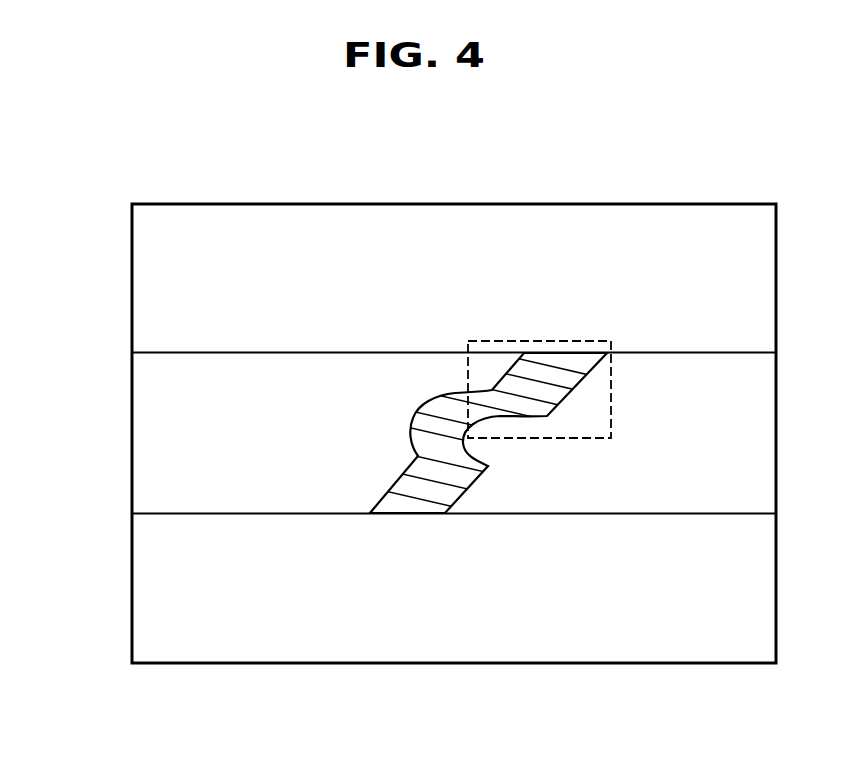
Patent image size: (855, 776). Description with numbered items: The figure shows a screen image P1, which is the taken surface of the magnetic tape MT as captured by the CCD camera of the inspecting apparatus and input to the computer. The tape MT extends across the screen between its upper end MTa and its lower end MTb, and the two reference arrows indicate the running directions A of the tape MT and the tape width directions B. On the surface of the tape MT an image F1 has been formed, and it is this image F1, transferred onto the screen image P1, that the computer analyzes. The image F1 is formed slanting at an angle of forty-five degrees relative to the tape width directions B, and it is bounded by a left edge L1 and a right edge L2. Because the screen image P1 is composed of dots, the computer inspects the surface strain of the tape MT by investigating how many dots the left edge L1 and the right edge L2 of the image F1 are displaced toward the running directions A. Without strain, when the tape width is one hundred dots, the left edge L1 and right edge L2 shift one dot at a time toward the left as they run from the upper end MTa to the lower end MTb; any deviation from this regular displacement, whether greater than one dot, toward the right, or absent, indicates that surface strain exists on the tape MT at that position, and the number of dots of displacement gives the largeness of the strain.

The screen image P1 is at (276, 190).
The running directions A is at (653, 153).
The tape width directions B is at (68, 332).
The tape MT is at (404, 325).
The upper end MTa is at (675, 352).
The lower end MTb is at (736, 514).
The image F1 is at (478, 484).
The left edge L1 is at (399, 478).
The right edge L2 is at (595, 375).